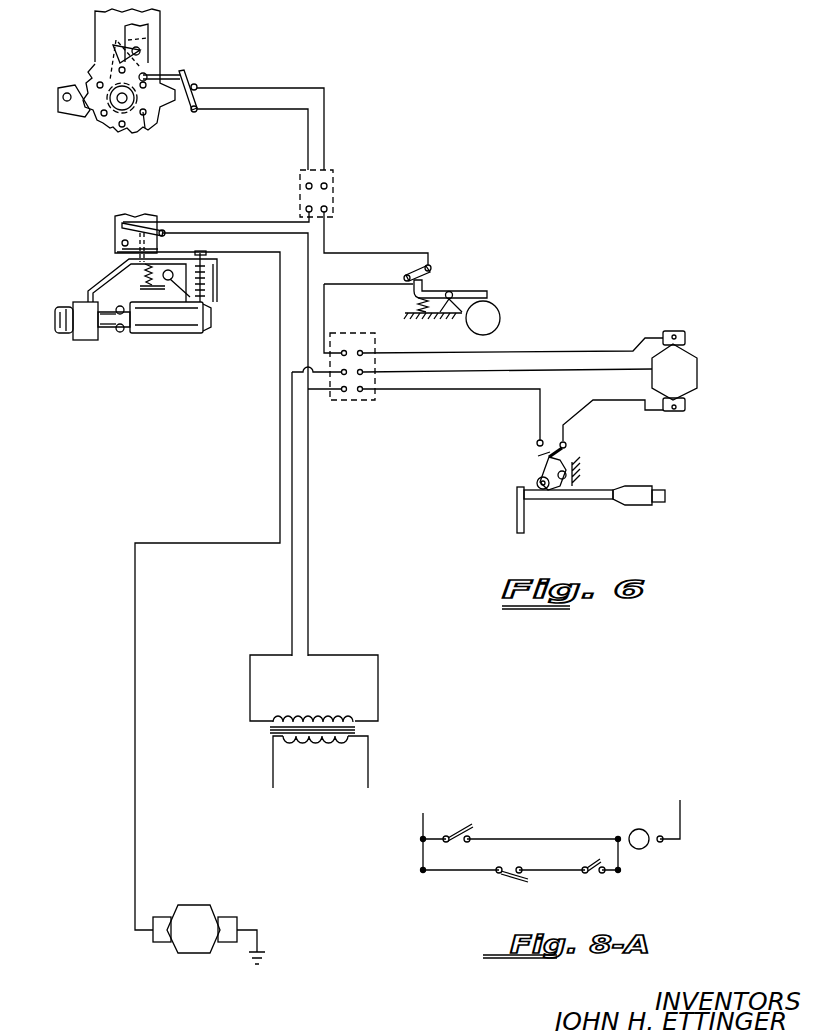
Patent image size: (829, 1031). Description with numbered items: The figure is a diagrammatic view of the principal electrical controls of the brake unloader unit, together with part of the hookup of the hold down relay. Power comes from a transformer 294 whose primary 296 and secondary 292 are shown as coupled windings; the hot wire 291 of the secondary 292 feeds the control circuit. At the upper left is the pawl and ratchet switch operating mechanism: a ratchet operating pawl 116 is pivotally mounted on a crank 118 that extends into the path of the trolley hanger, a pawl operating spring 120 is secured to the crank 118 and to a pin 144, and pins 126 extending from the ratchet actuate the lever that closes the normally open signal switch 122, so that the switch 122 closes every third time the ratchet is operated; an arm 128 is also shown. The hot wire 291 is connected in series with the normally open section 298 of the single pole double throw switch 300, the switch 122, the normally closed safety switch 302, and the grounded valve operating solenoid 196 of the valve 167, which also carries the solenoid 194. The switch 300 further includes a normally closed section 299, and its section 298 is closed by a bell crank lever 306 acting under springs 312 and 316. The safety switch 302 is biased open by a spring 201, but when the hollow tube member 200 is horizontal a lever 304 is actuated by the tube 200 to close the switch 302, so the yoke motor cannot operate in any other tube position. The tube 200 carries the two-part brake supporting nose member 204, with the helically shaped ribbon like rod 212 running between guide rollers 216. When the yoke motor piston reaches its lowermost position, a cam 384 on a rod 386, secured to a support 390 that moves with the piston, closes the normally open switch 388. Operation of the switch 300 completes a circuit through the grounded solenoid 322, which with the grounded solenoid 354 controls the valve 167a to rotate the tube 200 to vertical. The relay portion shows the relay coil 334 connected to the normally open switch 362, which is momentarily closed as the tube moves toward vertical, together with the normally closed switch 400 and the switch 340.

In FIG. 6, the ratchet operating pawl 116 is at (122, 47).
In FIG. 6, the crank 118 is at (156, 32).
In FIG. 6, the pawl operating spring 120 is at (112, 50).
In FIG. 6, the normally open switch 122 is at (199, 75).
In FIG. 6, the pins 126 is at (137, 130).
In FIG. 6, the arm 128 is at (80, 109).
In FIG. 6, the pin 144 is at (121, 100).
In FIG. 6, the normally open section 298 is at (143, 230).
In FIG. 6, the normally closed section 299 is at (128, 254).
In FIG. 6, the single pole double throw switch 300 is at (115, 237).
In FIG. 6, the bell crank lever 306 is at (171, 270).
In FIG. 6, the spring 312 is at (205, 285).
In FIG. 6, the spring 316 is at (153, 280).
In FIG. 6, the hollow tube member 200 is at (205, 334).
In FIG. 6, the two-part brake supporting nose member 204 is at (63, 340).
In FIG. 6, the helically shaped ribbon like rod 212 is at (117, 332).
In FIG. 6, the guide rollers 216 is at (124, 333).
In FIG. 6, the normally closed safety switch 302 is at (422, 272).
In FIG. 6, the spring 201 is at (428, 296).
In FIG. 6, the lever 304 is at (470, 297).
In FIG. 6, the valve 167 is at (690, 371).
In FIG. 6, the solenoid 196 is at (684, 338).
In FIG. 6, the solenoid 194 is at (684, 410).
In FIG. 6, the normally open switch 388 is at (538, 452).
In FIG. 6, the support 390 is at (517, 520).
In FIG. 6, the rod 386 is at (560, 501).
In FIG. 6, the cam 384 is at (618, 506).
In FIG. 6, the hot wire 291 is at (310, 504).
In FIG. 6, the secondary 292 is at (332, 712).
In FIG. 6, the transformer 294 is at (365, 730).
In FIG. 6, the primary 296 is at (323, 740).
In FIG. 6, the valve 167a is at (205, 952).
In FIG. 6, the grounded solenoid 322 is at (158, 944).
In FIG. 6, the grounded solenoid 354 is at (224, 918).
In FIG. 8A, the normally open switch 362 is at (462, 826).
In FIG. 8A, the relay coil 334 is at (639, 830).
In FIG. 8A, the normally closed switch 400 is at (500, 882).
In FIG. 8A, the switch 340 is at (585, 880).